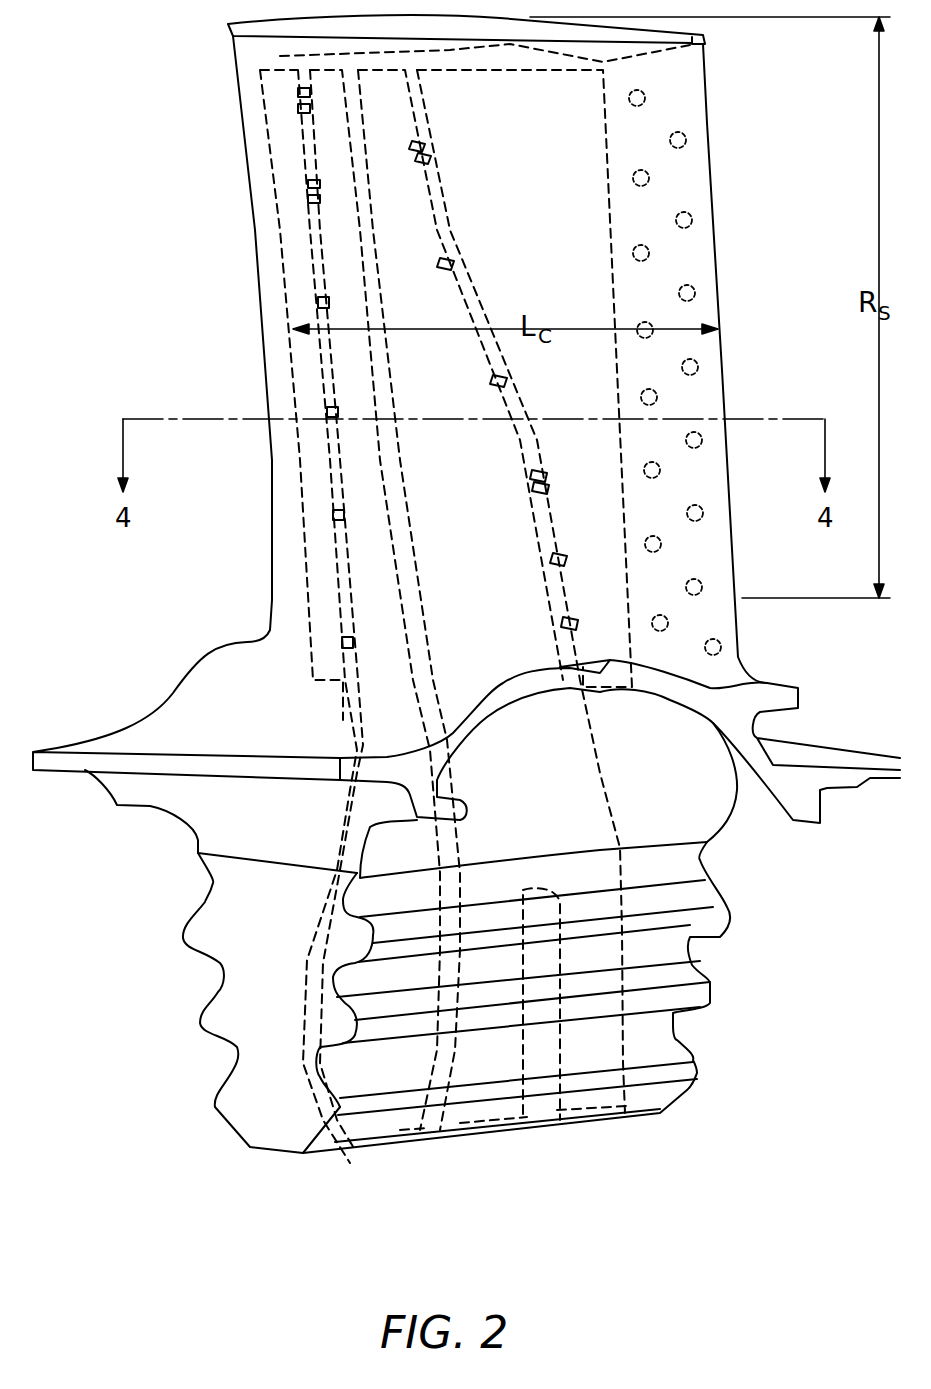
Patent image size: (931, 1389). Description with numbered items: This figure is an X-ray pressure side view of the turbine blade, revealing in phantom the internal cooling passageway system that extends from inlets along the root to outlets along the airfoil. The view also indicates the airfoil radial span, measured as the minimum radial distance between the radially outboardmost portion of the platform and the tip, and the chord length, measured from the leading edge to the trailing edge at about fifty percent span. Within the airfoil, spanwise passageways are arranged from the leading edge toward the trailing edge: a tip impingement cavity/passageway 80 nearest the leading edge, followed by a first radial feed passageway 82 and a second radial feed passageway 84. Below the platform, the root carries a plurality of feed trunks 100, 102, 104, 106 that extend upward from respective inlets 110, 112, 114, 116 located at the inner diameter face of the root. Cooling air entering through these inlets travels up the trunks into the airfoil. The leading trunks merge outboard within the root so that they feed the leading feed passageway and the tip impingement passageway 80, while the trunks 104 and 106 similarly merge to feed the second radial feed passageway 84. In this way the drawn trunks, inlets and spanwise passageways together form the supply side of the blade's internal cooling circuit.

The tip impingement cavity/passageway 80 is at (297, 289).
The first radial feed passageway 82 is at (367, 533).
The second radial feed passageway 84 is at (511, 622).
The feed trunk 100 is at (343, 1072).
The feed trunk 102 is at (428, 979).
The feed trunk 104 is at (488, 983).
The feed trunk 106 is at (579, 963).
The inlet 110 is at (355, 1153).
The inlet 112 is at (423, 1140).
The inlet 114 is at (490, 1137).
The inlet 116 is at (600, 1130).